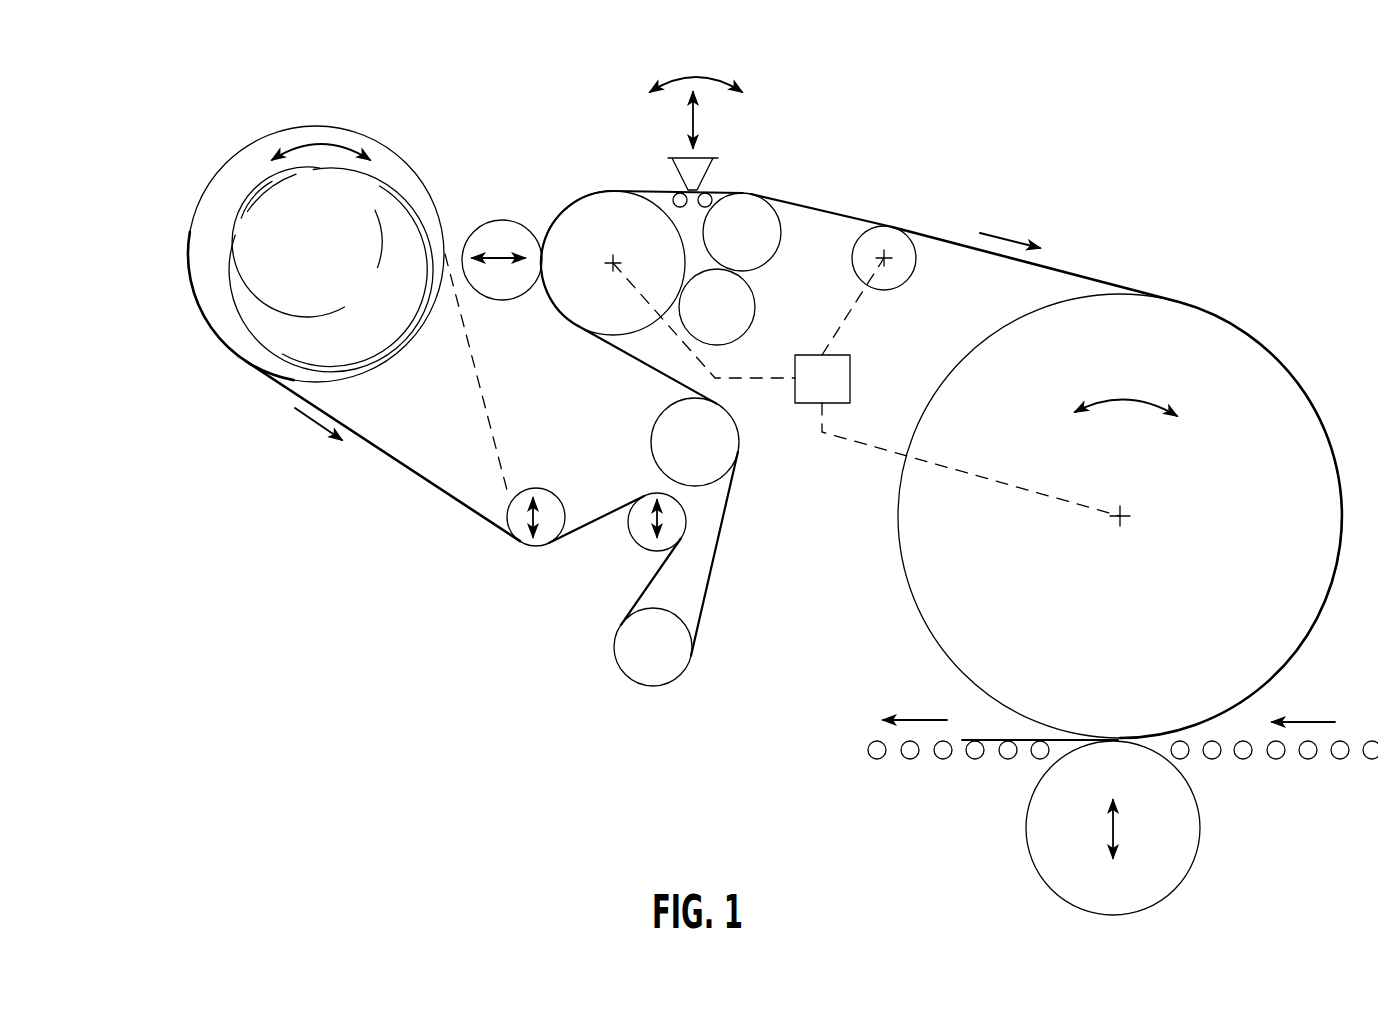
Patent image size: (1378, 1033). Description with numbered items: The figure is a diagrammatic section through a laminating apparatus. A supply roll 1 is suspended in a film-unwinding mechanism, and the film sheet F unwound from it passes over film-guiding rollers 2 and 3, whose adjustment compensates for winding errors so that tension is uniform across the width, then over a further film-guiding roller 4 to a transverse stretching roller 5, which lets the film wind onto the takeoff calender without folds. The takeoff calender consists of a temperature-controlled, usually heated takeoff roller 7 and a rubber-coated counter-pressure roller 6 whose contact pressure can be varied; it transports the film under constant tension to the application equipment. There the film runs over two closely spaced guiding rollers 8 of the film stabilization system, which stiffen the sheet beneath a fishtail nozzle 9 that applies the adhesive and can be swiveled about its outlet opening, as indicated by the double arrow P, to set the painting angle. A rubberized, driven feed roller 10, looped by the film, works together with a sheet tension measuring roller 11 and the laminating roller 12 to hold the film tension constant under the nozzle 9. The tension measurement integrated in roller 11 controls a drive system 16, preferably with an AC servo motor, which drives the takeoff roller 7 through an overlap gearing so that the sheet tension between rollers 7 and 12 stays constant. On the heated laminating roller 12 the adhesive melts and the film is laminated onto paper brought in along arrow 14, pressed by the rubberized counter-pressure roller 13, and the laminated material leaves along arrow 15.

The supply roll 1 is at (250, 170).
The film-guiding roller 2 is at (515, 530).
The film-guiding roller 3 is at (638, 530).
The film-guiding roller 4 is at (628, 667).
The transverse stretching roller 5 is at (733, 435).
The counter-pressure roller 6 is at (504, 228).
The takeoff roller 7 is at (598, 200).
The guiding rollers 8 is at (663, 195).
The fishtail nozzle 9 is at (710, 109).
The feed roller 10 is at (765, 220).
The sheet tension measuring roller 11 is at (898, 240).
The laminating roller 12 is at (1267, 349).
The counter-pressure roller 13 is at (1175, 867).
The arrow indicating direction of incoming material 14 is at (1315, 722).
The arrow indicating transport of laminated material 15 is at (921, 720).
The drive system 16 is at (850, 372).
The film sheet F is at (388, 457).
The double arrow indicating swiveling of nozzle P is at (695, 43).